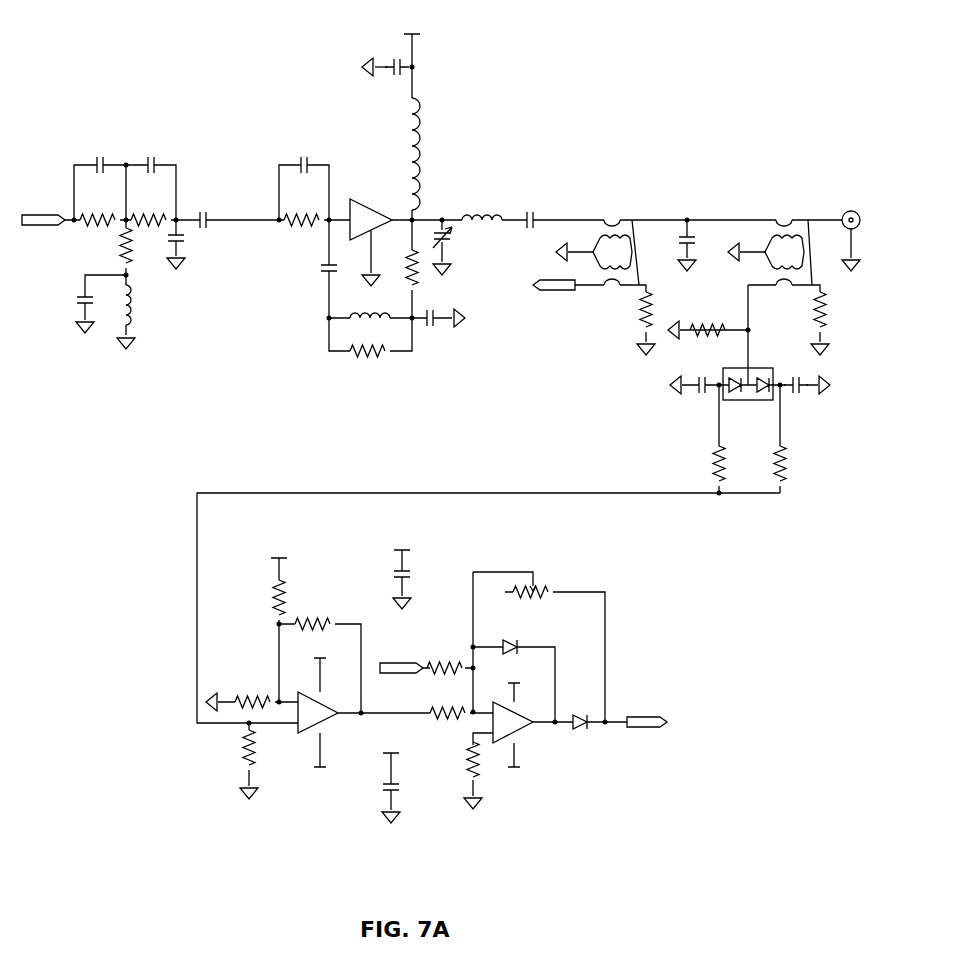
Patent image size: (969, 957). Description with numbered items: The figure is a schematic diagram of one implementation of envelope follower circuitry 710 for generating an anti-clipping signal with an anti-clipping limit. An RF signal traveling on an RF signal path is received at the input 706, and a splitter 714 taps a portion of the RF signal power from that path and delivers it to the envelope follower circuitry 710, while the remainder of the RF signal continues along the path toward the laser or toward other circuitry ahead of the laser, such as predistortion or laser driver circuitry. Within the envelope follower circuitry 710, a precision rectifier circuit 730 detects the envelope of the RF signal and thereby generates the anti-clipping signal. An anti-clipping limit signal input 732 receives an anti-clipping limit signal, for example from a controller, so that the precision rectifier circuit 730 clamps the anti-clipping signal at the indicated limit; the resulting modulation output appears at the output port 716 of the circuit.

The input 706 is at (45, 229).
The splitter 714 is at (770, 204).
The envelope follower circuitry 710 is at (734, 604).
The anti-clipping limit signal input 732 is at (400, 662).
The precision rectifier circuit 730 is at (570, 788).
The modulation output port (Mod) 716 is at (650, 733).